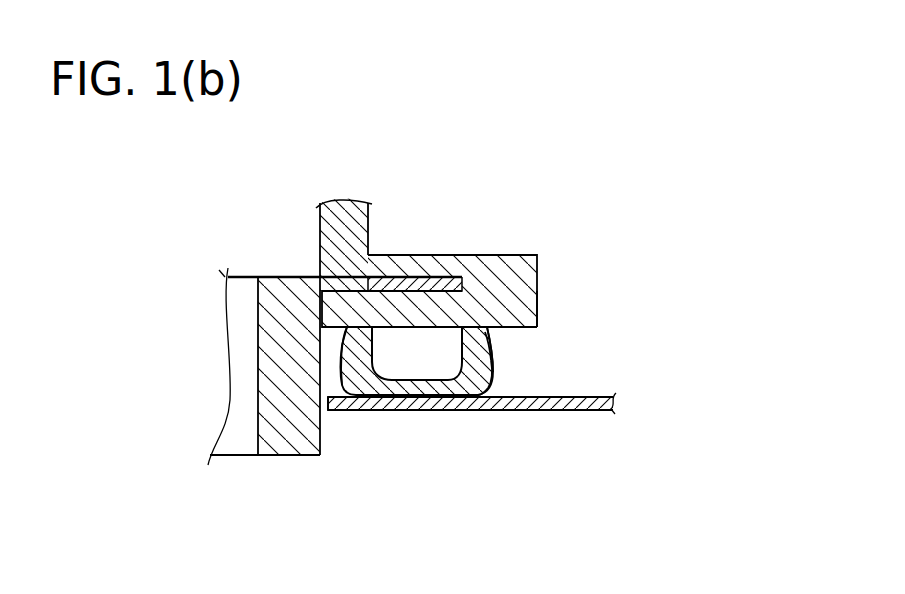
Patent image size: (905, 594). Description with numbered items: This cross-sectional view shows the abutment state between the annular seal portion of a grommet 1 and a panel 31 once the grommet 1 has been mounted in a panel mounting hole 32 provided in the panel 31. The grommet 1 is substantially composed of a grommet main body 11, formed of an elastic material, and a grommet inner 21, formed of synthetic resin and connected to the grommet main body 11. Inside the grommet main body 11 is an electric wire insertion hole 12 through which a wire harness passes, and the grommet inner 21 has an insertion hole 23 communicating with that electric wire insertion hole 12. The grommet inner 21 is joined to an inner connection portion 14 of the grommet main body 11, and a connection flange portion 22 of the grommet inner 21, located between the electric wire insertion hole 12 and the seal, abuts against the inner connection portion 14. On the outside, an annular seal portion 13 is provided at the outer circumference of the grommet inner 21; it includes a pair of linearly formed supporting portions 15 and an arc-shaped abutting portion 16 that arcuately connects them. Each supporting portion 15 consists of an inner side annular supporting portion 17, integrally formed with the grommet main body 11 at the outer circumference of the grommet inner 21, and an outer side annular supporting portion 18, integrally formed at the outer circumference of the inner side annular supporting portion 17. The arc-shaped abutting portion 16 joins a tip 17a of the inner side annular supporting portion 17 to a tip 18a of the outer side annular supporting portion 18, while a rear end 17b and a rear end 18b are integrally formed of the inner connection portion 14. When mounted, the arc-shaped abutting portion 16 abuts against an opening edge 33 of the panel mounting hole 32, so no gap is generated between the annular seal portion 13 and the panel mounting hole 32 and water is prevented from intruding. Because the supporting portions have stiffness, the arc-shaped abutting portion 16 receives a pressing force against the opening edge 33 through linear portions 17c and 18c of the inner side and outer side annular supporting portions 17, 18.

The grommet 1 is at (437, 148).
The grommet main body 11 is at (475, 255).
The electric wire insertion hole 12 is at (320, 240).
The annular seal portion 13 is at (537, 368).
The inner connection portion 14 is at (518, 290).
The supporting portion 15 is at (332, 350).
The arc-shaped abutting portion 16 is at (396, 388).
The inner side annular supporting portion 17 is at (330, 558).
The tip of inner side annular supporting portion 17a is at (358, 397).
The rear end of inner side annular supporting portion 17b is at (340, 342).
The linear portion of inner side annular supporting portion 17c is at (350, 345).
The outer side annular supporting portion 18 is at (570, 420).
The tip of outer side annular supporting portion 18a is at (480, 397).
The rear end of outer side annular supporting portion 18b is at (493, 332).
The linear portion of outer side annular supporting portion 18c is at (490, 358).
The grommet inner 21 is at (278, 272).
The connection flange portion 22 is at (390, 277).
The insertion hole 23 is at (242, 325).
The panel 31 is at (613, 403).
The panel mounting hole 32 is at (328, 402).
The opening edge 33 is at (436, 422).